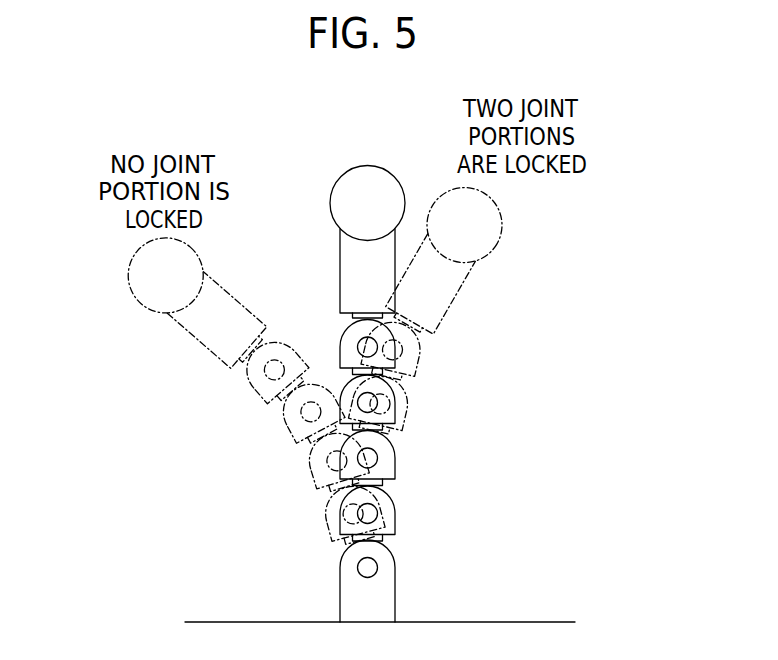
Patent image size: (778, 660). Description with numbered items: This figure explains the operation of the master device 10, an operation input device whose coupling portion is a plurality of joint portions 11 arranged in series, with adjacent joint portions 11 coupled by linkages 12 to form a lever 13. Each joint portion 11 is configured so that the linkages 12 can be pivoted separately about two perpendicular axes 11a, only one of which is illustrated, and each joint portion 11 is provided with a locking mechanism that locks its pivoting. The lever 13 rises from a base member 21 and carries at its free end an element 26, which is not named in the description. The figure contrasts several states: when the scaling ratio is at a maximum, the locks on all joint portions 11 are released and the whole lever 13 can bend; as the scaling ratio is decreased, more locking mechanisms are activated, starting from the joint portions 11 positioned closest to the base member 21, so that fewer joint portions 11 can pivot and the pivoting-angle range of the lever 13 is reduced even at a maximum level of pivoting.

The master device 10 is at (676, 150).
The joint portions 11 is at (322, 315).
The axes 11a is at (387, 347).
The linkages 12 is at (403, 322).
The lever 13 is at (505, 438).
The base member 21 is at (557, 620).
The end effector 26 is at (330, 199).